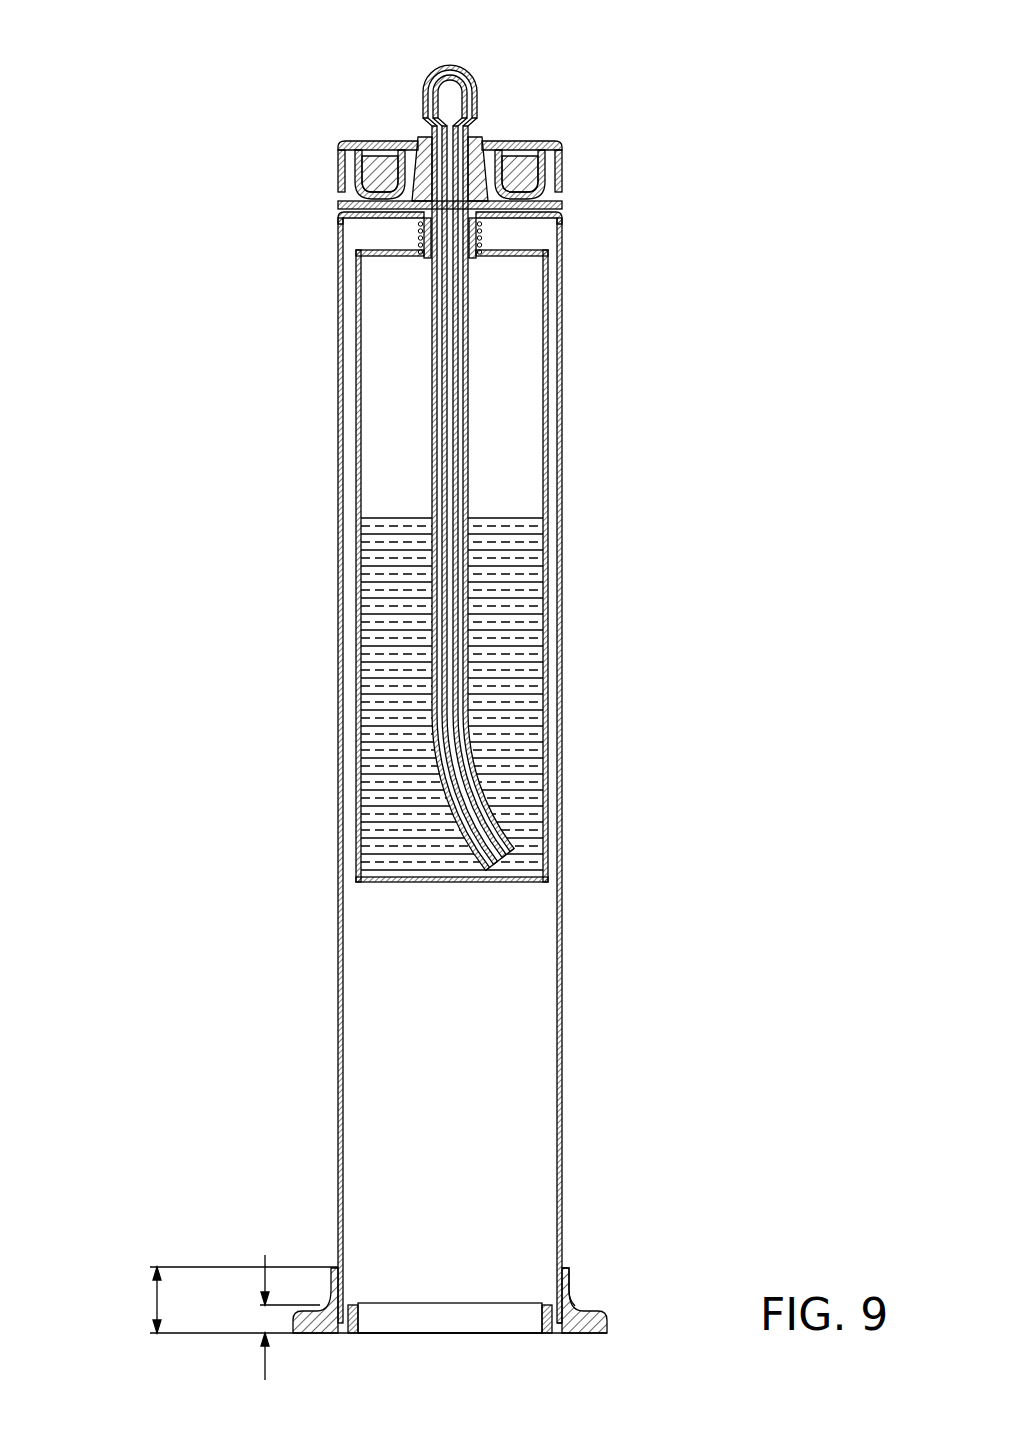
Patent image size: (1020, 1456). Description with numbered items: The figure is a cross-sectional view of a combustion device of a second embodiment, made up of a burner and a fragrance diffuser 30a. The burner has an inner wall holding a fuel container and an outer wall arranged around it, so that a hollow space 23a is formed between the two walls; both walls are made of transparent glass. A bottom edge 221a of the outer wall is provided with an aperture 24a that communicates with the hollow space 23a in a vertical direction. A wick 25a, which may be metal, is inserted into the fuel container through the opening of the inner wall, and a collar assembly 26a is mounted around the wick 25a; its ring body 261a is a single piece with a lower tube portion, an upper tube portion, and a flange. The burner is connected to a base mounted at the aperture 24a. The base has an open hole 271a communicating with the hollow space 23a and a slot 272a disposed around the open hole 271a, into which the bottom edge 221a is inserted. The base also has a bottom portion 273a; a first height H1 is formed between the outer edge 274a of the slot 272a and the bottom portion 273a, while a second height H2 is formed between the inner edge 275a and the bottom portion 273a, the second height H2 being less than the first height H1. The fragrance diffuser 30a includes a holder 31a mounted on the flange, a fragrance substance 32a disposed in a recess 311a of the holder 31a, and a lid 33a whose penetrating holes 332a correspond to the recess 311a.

The hollow space 23a is at (488, 1046).
The aperture 24a is at (540, 1340).
The wick 25a is at (466, 66).
The collar assembly 26a is at (422, 118).
The fragrance diffuser 30a is at (445, 122).
The holder 31a is at (548, 187).
The fragrance substance 32a is at (562, 162).
The lid 33a is at (338, 163).
The recess 311a is at (516, 166).
The penetrating holes 332a is at (365, 141).
The ring body 261a is at (400, 190).
The open hole 271a is at (508, 1318).
The slot 272a is at (570, 1298).
The bottom portion 273a is at (305, 1335).
The outer edge 274a is at (568, 1268).
The inner edge 275a is at (549, 1315).
The bottom edge 221a is at (560, 1328).
The first height H1 is at (157, 1300).
The second height H2 is at (265, 1312).